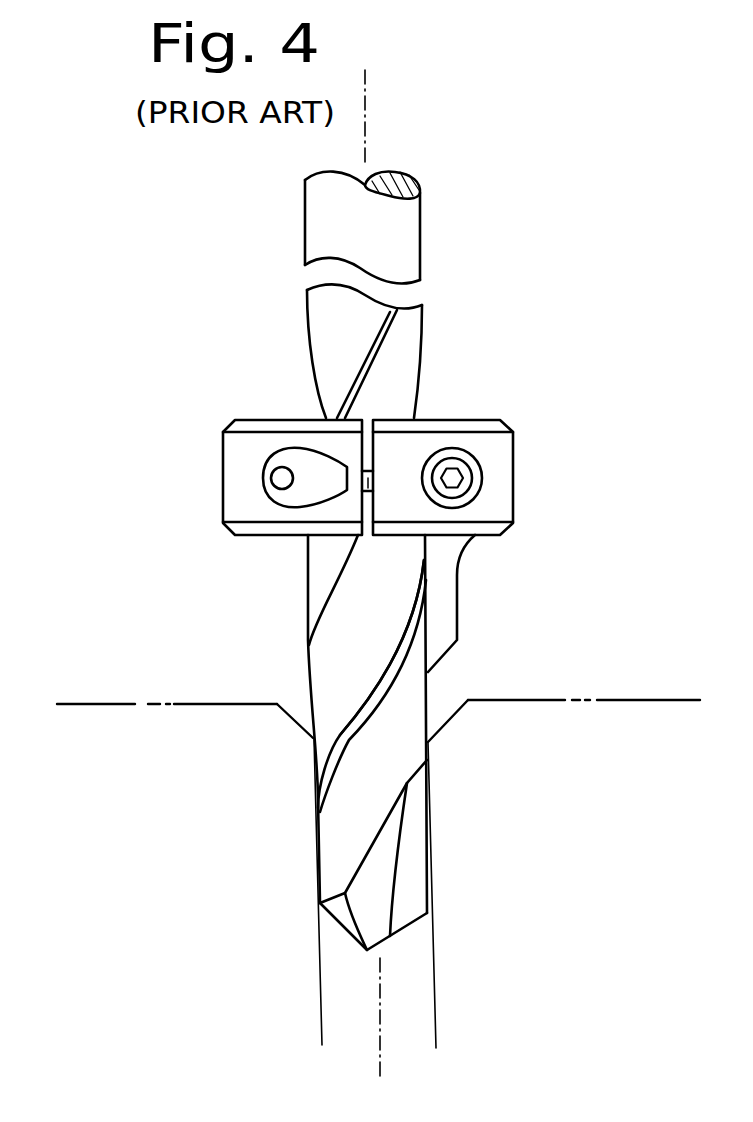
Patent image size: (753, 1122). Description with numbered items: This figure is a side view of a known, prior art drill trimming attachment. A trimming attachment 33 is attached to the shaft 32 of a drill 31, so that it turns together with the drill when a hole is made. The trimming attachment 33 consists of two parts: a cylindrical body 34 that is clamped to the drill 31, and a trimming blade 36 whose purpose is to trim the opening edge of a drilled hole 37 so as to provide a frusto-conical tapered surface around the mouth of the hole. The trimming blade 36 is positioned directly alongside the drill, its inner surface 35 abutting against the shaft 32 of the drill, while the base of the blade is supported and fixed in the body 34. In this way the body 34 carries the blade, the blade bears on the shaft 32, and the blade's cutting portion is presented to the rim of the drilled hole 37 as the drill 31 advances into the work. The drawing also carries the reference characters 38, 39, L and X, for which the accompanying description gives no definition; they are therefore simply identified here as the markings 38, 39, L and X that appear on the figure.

The drill 31 is at (425, 235).
The shaft 32 is at (307, 570).
The trimming attachment 33 is at (515, 443).
The cylindrical body 34 is at (499, 484).
The inner surface 35 is at (424, 632).
The trimming blade 36 is at (448, 579).
The drilled hole 37 is at (424, 772).
The workpiece 38 is at (295, 706).
The workpiece surface 39 is at (635, 700).
The axis L is at (367, 105).
The rotation direction X is at (357, 1027).